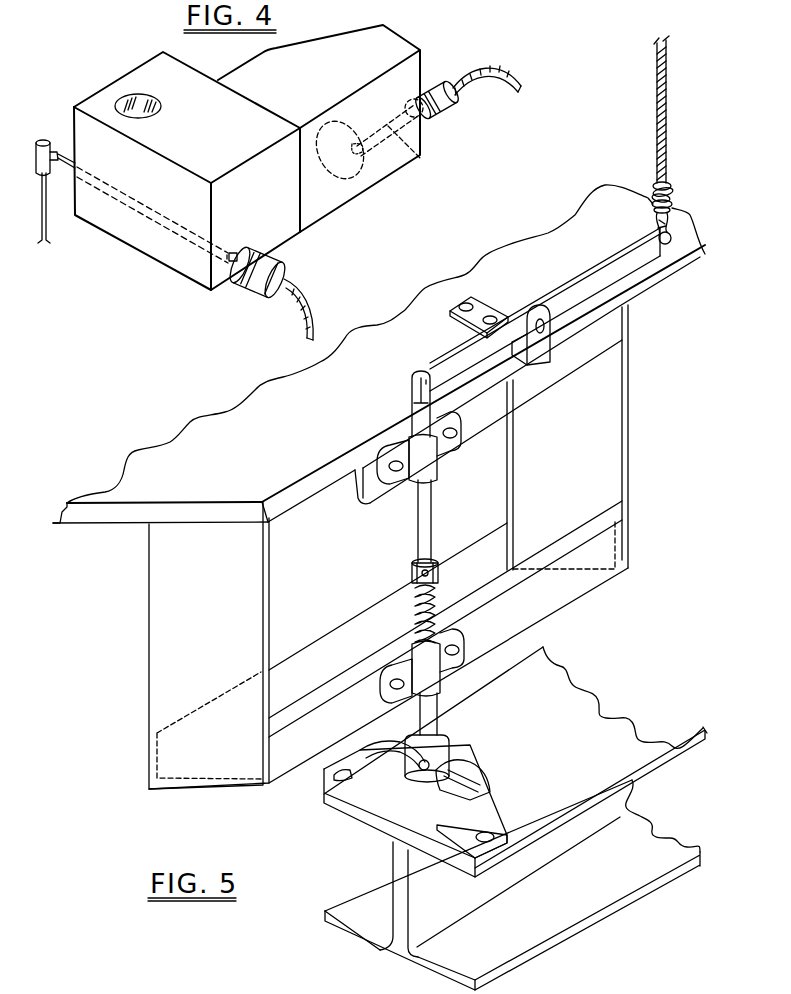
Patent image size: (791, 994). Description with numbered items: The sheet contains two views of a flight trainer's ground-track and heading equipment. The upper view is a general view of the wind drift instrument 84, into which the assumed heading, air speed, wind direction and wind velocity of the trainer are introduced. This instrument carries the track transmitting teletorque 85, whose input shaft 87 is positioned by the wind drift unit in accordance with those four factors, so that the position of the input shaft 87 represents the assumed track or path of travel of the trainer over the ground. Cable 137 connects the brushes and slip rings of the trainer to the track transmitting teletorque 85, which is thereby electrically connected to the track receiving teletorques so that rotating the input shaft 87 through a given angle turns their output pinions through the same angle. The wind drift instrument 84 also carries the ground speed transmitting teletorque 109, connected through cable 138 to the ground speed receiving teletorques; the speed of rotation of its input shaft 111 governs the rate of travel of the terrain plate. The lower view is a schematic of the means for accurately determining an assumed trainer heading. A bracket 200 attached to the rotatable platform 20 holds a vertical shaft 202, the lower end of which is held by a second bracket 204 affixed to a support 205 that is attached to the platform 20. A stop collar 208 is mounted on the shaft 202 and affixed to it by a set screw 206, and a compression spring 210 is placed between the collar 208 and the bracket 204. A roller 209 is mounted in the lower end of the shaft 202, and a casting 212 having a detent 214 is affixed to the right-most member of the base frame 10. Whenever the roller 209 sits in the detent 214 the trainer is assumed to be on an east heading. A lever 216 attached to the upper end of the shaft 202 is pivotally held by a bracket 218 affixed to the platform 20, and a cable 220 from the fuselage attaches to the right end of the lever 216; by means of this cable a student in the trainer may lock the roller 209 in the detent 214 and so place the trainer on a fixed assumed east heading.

In FIG. 5, the base frame 10 is at (656, 853).
In FIG. 5, the rotatable platform 20 is at (116, 509).
In FIG. 4, the wind drift instrument 84 is at (375, 179).
In FIG. 4, the track transmitting teletorque 85 is at (285, 268).
In FIG. 4, the input shaft 87 is at (238, 251).
In FIG. 4, the ground speed transmitting teletorque 109 is at (439, 113).
In FIG. 4, the input shaft 111 is at (420, 160).
In FIG. 4, the cable 137 is at (317, 306).
In FIG. 4, the cable 138 is at (497, 80).
In FIG. 5, the bracket 200 is at (394, 483).
In FIG. 5, the vertical shaft 202 is at (433, 508).
In FIG. 5, the second bracket 204 is at (457, 641).
In FIG. 5, the support 205 is at (570, 590).
In FIG. 5, the set screw 206 is at (412, 574).
In FIG. 5, the stop collar 208 is at (438, 558).
In FIG. 5, the roller 209 is at (455, 748).
In FIG. 5, the compression spring 210 is at (436, 605).
In FIG. 5, the casting 212 is at (481, 786).
In FIG. 5, the detent 214 is at (366, 798).
In FIG. 5, the lever 216 is at (620, 268).
In FIG. 5, the bracket 218 is at (481, 312).
In FIG. 5, the cable 220 is at (668, 100).